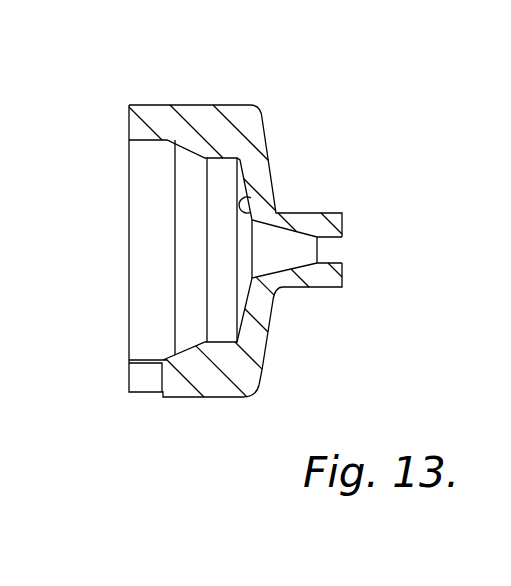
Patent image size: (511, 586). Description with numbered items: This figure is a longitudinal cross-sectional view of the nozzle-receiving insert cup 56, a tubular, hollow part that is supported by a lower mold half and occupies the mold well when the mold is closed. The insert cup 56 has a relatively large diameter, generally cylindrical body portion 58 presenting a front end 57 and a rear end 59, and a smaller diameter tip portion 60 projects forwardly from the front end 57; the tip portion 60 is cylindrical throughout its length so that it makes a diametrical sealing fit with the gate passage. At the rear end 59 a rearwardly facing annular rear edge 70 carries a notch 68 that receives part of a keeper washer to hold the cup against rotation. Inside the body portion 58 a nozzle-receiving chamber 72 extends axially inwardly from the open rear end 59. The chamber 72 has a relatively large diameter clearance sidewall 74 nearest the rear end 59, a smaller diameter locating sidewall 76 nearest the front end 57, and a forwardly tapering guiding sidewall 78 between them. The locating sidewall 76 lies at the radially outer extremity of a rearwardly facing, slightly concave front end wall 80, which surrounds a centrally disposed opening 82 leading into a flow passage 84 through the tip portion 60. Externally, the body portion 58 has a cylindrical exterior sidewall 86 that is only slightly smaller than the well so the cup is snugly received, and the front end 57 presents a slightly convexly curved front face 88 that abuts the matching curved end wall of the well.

The nozzle-receiving insert cup 56 is at (323, 117).
The front end 57 is at (268, 348).
The body portion 58 is at (218, 102).
The rear end 59 is at (128, 103).
The tip portion 60 is at (325, 292).
The notch 68 is at (134, 382).
The annular rear edge 70 is at (130, 128).
The nozzle-receiving chamber 72 is at (153, 262).
The clearance sidewall 74 is at (152, 143).
The locating sidewall 76 is at (213, 162).
The guiding sidewall 78 is at (198, 343).
The front end wall 80 is at (250, 222).
The opening 82 is at (250, 268).
The flow passage 84 is at (302, 243).
The exterior sidewall 86 is at (172, 104).
The front face 88 is at (273, 310).